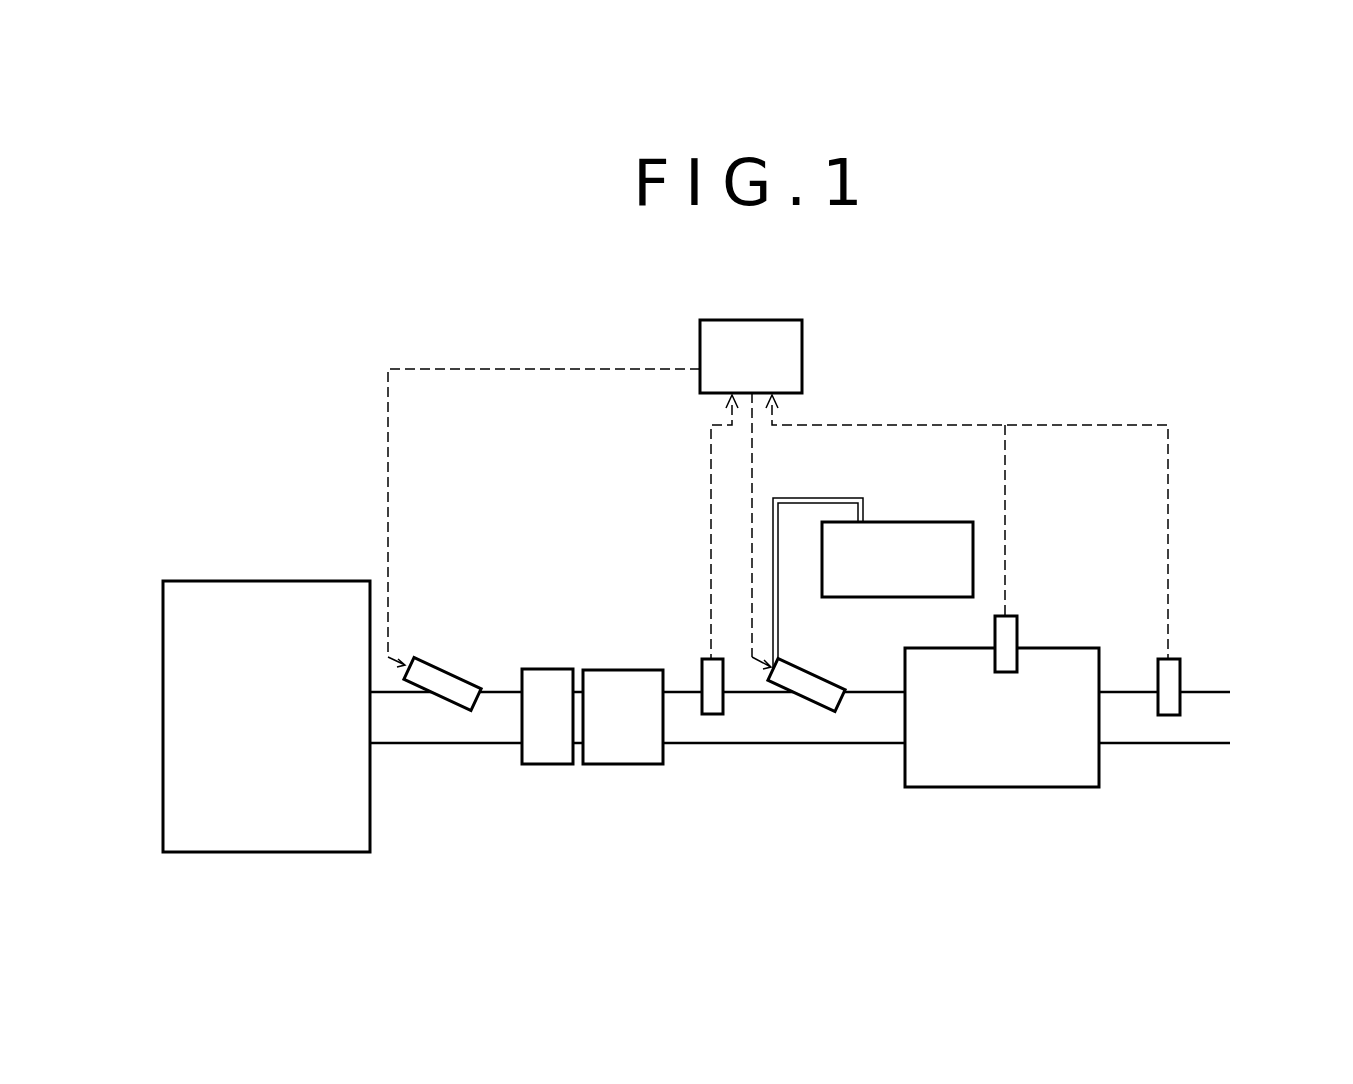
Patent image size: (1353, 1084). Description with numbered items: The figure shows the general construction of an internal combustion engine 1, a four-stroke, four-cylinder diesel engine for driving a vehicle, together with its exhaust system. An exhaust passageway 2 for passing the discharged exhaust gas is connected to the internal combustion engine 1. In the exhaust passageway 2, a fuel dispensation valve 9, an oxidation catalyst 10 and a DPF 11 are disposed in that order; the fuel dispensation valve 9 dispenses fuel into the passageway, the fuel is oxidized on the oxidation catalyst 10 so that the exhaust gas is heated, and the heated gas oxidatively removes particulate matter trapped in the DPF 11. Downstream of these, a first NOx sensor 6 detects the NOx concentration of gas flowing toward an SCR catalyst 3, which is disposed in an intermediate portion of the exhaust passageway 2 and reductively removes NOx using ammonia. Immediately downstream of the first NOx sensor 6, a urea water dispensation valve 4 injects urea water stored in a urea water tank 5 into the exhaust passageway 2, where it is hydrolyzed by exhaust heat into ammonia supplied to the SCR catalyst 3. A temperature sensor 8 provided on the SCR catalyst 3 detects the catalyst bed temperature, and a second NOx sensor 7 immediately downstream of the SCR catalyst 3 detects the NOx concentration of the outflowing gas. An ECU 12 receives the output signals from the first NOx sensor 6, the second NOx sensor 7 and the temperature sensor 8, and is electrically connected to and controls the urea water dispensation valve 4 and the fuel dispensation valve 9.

The internal combustion engine 1 is at (270, 581).
The exhaust passageway 2 is at (465, 745).
The SCR catalyst 3 is at (1005, 787).
The urea water dispensation valve 4 is at (805, 668).
The urea water tank 5 is at (920, 522).
The first NOx sensor 6 is at (702, 665).
The second NOx sensor 7 is at (1180, 670).
The temperature sensor 8 is at (1017, 626).
The fuel dispensation valve 9 is at (460, 680).
The oxidation catalyst 10 is at (548, 669).
The DPF 11 is at (621, 670).
The ECU 12 is at (802, 345).